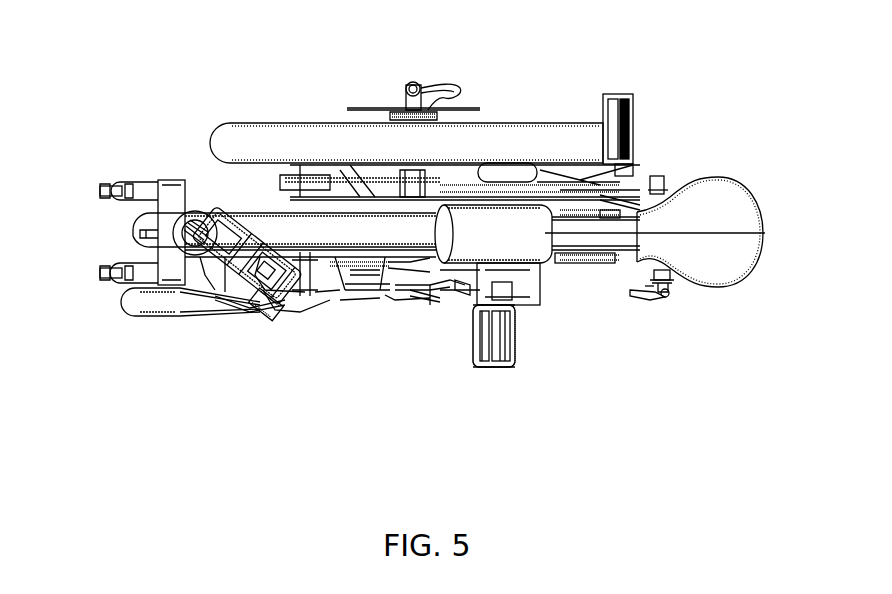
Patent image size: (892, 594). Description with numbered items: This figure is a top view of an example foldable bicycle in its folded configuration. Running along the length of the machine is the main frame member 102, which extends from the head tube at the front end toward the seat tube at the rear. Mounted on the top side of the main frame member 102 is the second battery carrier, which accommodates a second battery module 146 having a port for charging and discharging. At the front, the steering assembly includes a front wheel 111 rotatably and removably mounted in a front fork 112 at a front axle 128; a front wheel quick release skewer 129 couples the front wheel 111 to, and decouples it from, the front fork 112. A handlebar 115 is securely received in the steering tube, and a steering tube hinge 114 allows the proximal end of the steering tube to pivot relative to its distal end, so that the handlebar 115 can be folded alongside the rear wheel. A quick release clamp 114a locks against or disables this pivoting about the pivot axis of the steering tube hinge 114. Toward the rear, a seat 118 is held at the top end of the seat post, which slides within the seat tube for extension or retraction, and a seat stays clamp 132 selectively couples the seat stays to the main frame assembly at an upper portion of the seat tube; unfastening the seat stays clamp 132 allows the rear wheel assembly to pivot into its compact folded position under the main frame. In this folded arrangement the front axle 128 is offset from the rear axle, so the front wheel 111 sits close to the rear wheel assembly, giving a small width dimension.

The main frame member 102 is at (262, 233).
The front wheel 111 is at (222, 148).
The front fork 112 is at (140, 190).
The steering tube hinge 114 is at (205, 290).
The quick release clamp 114a is at (240, 300).
The handlebar 115 is at (130, 303).
The seat 118 is at (700, 200).
The front axle 128 is at (433, 97).
The front wheel quick release skewer 129 is at (440, 87).
The seat stays clamp 132 is at (665, 292).
The second battery module 146 is at (478, 247).